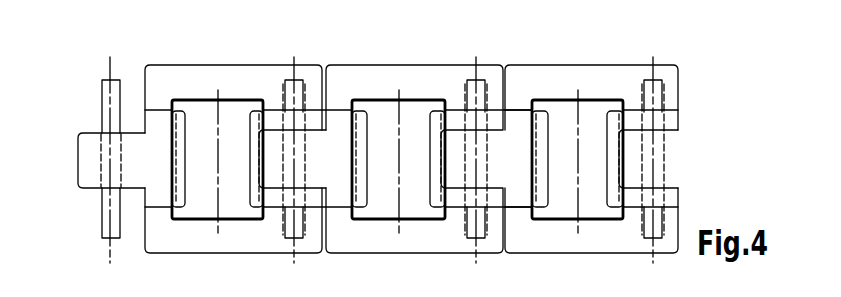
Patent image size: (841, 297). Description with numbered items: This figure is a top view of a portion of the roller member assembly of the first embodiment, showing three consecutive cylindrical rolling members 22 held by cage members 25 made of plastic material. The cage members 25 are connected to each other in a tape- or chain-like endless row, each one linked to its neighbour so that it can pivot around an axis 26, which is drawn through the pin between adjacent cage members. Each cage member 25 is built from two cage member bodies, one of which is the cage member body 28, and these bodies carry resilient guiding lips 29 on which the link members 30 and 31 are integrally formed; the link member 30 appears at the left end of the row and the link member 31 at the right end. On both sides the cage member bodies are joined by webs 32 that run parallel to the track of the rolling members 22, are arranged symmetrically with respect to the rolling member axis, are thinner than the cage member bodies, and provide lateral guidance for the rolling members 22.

The rolling member 22 is at (205, 115).
The cage member 25 is at (401, 49).
The axis 26 is at (115, 87).
The cage member body 28 is at (275, 117).
The resilient guiding lip 29 is at (185, 116).
The link member 30 is at (82, 143).
The link member 31 is at (673, 95).
The web 32 is at (600, 83).